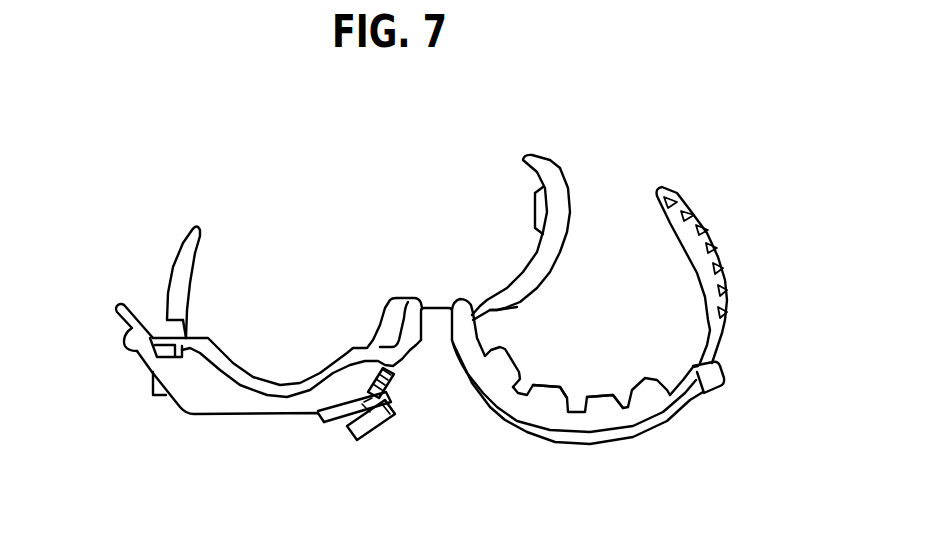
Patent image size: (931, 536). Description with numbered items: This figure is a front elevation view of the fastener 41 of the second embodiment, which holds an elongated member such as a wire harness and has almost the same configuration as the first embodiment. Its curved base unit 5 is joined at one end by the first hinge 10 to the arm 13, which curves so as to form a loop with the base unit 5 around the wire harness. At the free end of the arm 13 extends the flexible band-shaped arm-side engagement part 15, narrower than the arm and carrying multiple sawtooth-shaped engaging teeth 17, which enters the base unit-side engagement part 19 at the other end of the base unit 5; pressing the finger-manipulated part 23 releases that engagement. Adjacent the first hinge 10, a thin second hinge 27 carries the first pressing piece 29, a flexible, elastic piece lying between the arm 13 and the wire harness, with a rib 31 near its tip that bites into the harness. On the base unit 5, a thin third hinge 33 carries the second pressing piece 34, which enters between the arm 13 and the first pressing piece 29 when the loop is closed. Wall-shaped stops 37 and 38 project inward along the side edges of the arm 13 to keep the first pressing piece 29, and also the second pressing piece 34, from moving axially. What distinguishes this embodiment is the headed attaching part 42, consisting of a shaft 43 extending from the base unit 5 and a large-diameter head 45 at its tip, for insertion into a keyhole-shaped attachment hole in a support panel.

The fastener 41 is at (317, 179).
The base unit 5 is at (271, 408).
The finger-manipulated part 23 is at (122, 313).
The base unit-side engagement part 19 is at (152, 371).
The second pressing piece 34 is at (173, 268).
The third hinge 33 is at (188, 320).
The first hinge 10 is at (437, 307).
The arm 13 is at (590, 432).
The second hinge 27 is at (473, 316).
The first pressing piece 29 is at (547, 268).
The rib 31 is at (538, 215).
The arm-side engagement part 15 is at (720, 306).
The engaging teeth 17 is at (701, 228).
The stops 37 is at (550, 388).
The stops 38 is at (513, 358).
The headed attaching part 42 is at (395, 478).
The shaft 43 is at (342, 420).
The large-diameter head 45 is at (373, 426).